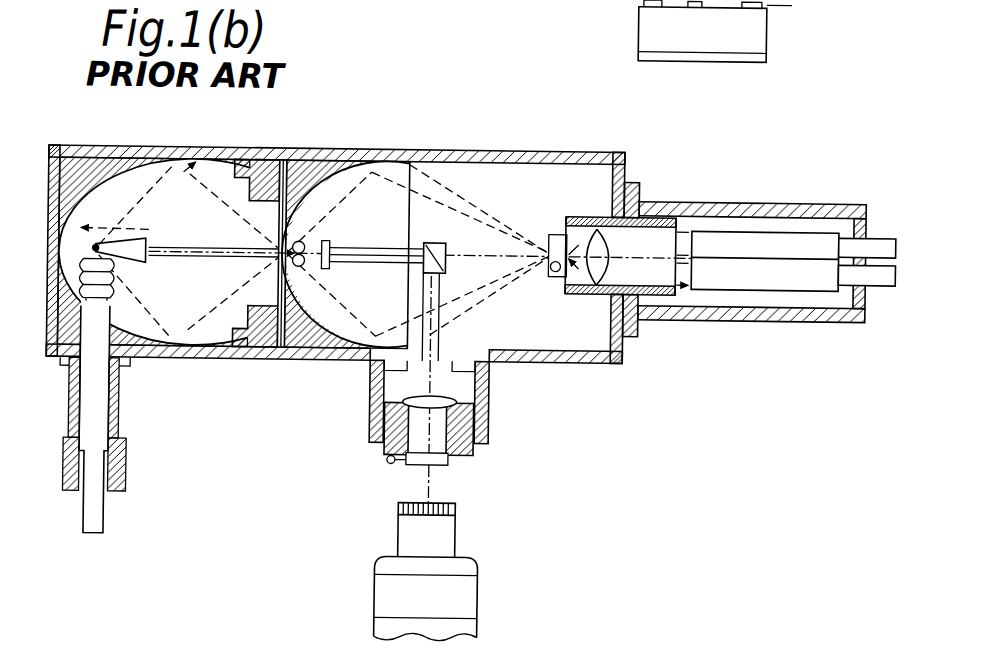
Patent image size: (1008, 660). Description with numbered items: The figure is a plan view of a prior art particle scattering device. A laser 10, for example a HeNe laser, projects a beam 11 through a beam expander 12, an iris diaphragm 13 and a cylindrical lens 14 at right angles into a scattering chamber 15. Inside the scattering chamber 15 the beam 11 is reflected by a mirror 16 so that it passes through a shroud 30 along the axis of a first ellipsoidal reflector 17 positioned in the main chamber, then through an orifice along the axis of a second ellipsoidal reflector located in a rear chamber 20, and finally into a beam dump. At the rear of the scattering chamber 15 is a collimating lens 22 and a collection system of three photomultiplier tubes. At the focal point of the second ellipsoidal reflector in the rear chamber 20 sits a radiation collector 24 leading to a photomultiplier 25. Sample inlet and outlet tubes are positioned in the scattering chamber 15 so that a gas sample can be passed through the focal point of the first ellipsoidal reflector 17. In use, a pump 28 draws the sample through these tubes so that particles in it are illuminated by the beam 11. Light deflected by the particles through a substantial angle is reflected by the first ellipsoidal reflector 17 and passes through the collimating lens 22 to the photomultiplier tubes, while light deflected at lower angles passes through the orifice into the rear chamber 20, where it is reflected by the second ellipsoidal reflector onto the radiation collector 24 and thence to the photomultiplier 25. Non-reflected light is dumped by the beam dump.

The laser 10 is at (445, 595).
The beam expander 12 is at (425, 532).
The iris diaphragm 13 is at (460, 498).
The cylindrical lens 14 is at (433, 408).
The scattering chamber 15 is at (490, 190).
The mirror 16 is at (447, 240).
The first ellipsoidal reflector 17 is at (297, 180).
The beam 11 is at (393, 162).
The rear chamber 20 is at (182, 198).
The collimating lens 22 is at (643, 209).
The radiation collector 24 is at (100, 238).
The photomultiplier 25 is at (98, 406).
The pump 28 is at (677, 17).
The shroud 30 is at (287, 346).